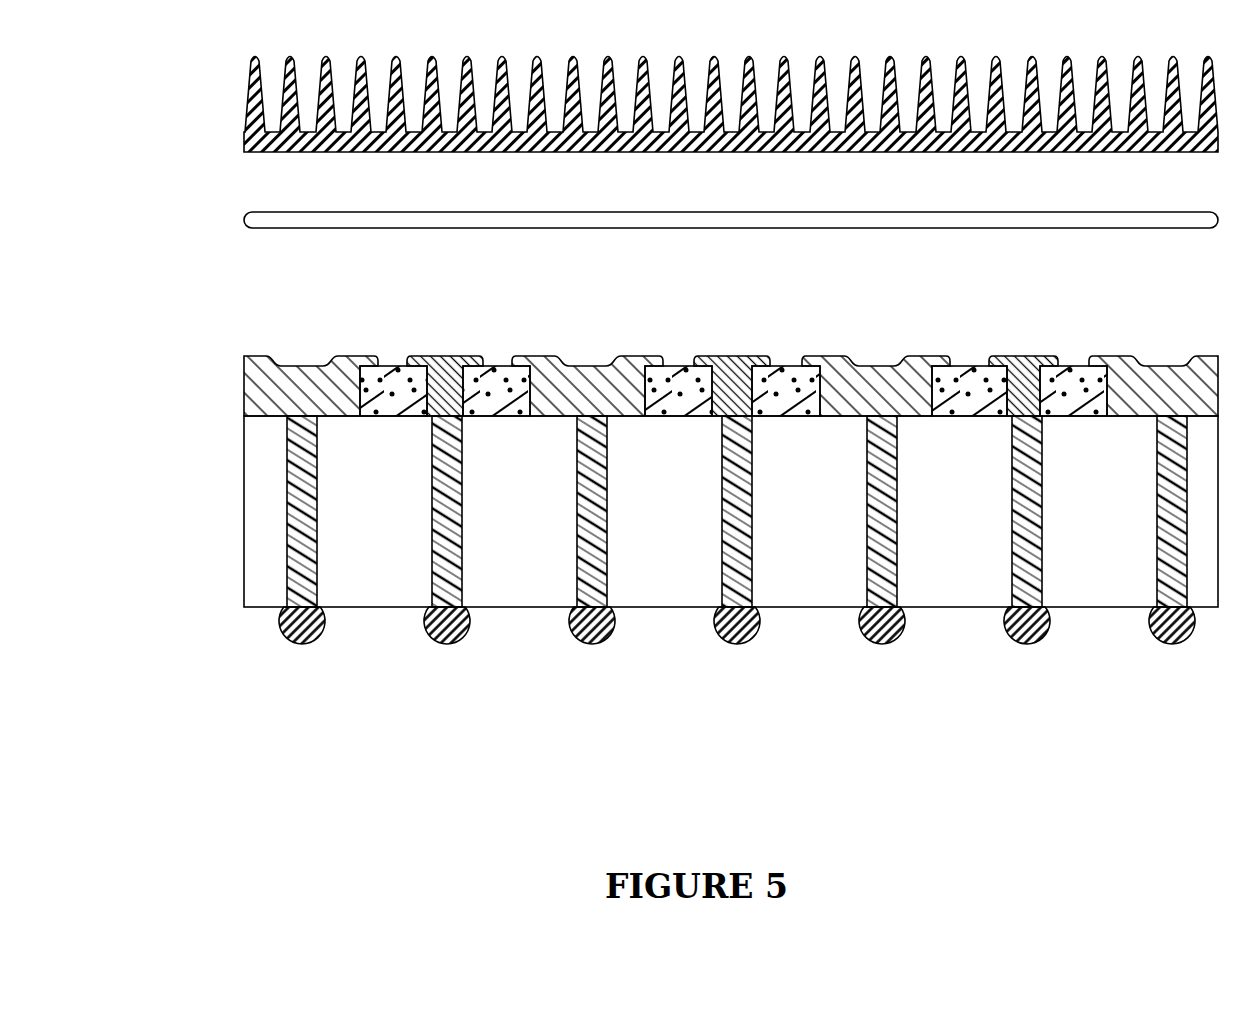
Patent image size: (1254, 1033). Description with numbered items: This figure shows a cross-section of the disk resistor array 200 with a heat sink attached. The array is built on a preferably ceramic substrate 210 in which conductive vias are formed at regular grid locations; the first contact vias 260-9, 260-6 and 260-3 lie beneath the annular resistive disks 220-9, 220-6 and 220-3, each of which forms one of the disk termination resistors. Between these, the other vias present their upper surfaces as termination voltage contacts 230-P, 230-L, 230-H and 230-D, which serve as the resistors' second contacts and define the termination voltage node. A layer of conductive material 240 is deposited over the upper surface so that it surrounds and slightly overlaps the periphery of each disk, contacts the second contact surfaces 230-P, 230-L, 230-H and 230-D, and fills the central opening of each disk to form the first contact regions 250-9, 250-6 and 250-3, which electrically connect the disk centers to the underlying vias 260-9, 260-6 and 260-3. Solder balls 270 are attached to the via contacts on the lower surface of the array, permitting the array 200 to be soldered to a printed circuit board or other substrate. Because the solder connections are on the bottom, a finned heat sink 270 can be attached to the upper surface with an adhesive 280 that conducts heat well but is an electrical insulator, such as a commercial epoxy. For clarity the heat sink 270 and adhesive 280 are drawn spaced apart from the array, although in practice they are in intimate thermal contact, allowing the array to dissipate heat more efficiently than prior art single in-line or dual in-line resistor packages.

The array of disk resistors 200 is at (158, 294).
The substrate 210 is at (244, 572).
The resistive disk 220-9 is at (395, 375).
The resistive disk 220-6 is at (680, 375).
The resistive disk 220-3 is at (969, 375).
The termination voltage contact 230-P is at (305, 530).
The termination voltage contact 230-L is at (592, 530).
The termination voltage contact 230-H is at (882, 530).
The termination voltage contact 230-D is at (1172, 530).
The conductive material layer 240 is at (731, 386).
The first contact region 250-9 is at (443, 388).
The first contact region 250-6 is at (731, 388).
The first contact region 250-3 is at (1023, 388).
The first contact conductive via 260-9 is at (447, 530).
The first contact conductive via 260-6 is at (737, 530).
The first contact conductive via 260-3 is at (1027, 530).
The heat sink / solder balls 270 is at (224, 103).
The adhesive 280 is at (237, 221).